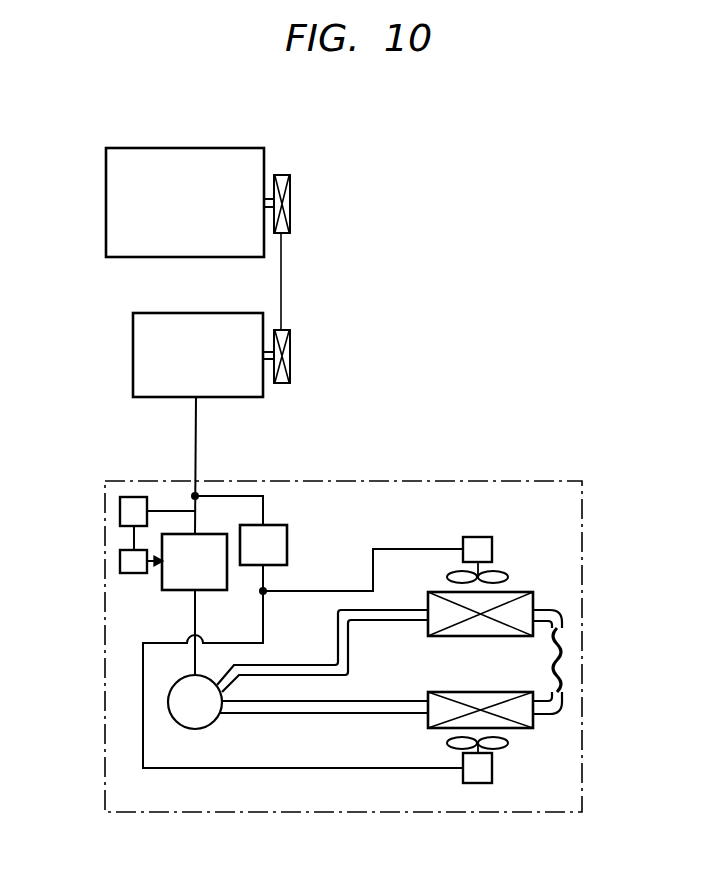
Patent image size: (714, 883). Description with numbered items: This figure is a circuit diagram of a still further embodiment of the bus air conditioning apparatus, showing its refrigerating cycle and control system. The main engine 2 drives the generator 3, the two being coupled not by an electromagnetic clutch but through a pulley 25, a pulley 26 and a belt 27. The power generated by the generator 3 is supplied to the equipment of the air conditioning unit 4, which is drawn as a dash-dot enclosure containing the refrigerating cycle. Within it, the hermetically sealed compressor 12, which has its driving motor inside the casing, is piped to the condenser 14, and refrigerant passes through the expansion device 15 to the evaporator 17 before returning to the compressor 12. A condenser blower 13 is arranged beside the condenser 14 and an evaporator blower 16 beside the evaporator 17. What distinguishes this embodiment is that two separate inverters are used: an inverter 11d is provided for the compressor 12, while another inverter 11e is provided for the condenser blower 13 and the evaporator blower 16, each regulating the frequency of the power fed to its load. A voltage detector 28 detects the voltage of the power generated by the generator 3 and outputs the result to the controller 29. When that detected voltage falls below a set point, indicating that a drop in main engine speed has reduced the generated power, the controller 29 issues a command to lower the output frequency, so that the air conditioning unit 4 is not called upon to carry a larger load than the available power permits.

The main engine 2 is at (233, 150).
The generator 3 is at (133, 345).
The air conditioning unit 4 is at (193, 812).
The inverter 11d is at (162, 583).
The inverter 11e is at (287, 535).
The compressor 12 is at (205, 723).
The condenser blower 13 is at (485, 537).
The condenser 14 is at (513, 593).
The expansion device 15 is at (565, 655).
The evaporator blower 16 is at (476, 783).
The evaporator 17 is at (513, 728).
The pulley 25 is at (290, 199).
The pulley 26 is at (290, 352).
The belt 27 is at (283, 283).
The voltage detector 28 is at (120, 510).
The controller 29 is at (120, 560).